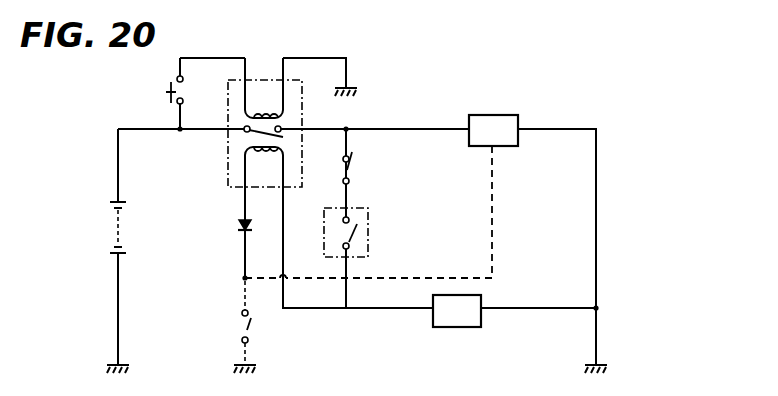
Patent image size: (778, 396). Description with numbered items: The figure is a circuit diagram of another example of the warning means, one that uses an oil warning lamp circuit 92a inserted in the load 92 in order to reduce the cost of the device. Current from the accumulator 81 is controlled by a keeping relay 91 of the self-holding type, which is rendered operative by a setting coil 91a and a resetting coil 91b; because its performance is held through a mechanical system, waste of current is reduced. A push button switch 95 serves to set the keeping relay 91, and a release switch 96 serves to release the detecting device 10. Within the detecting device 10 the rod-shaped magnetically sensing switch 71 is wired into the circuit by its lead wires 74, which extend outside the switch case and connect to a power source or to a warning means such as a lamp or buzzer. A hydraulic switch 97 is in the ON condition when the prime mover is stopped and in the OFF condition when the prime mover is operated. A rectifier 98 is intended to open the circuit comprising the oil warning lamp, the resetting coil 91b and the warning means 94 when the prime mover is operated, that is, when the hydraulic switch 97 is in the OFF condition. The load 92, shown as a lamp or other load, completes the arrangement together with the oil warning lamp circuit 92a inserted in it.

The detecting device 10 is at (369, 212).
The magnetically sensing switch 71 is at (352, 241).
The lead wires 74 is at (348, 196).
The accumulator 81 is at (121, 228).
The keeping relay 91 is at (226, 142).
The setting coil 91a is at (258, 110).
The resetting coil 91b is at (266, 150).
The load 92 is at (493, 114).
The oil warning lamp circuit 92a is at (493, 228).
The warning means 94 is at (462, 328).
The push button switch 95 is at (168, 86).
The release switch 96 is at (352, 168).
The hydraulic switch 97 is at (250, 329).
The rectifier 98 is at (240, 228).